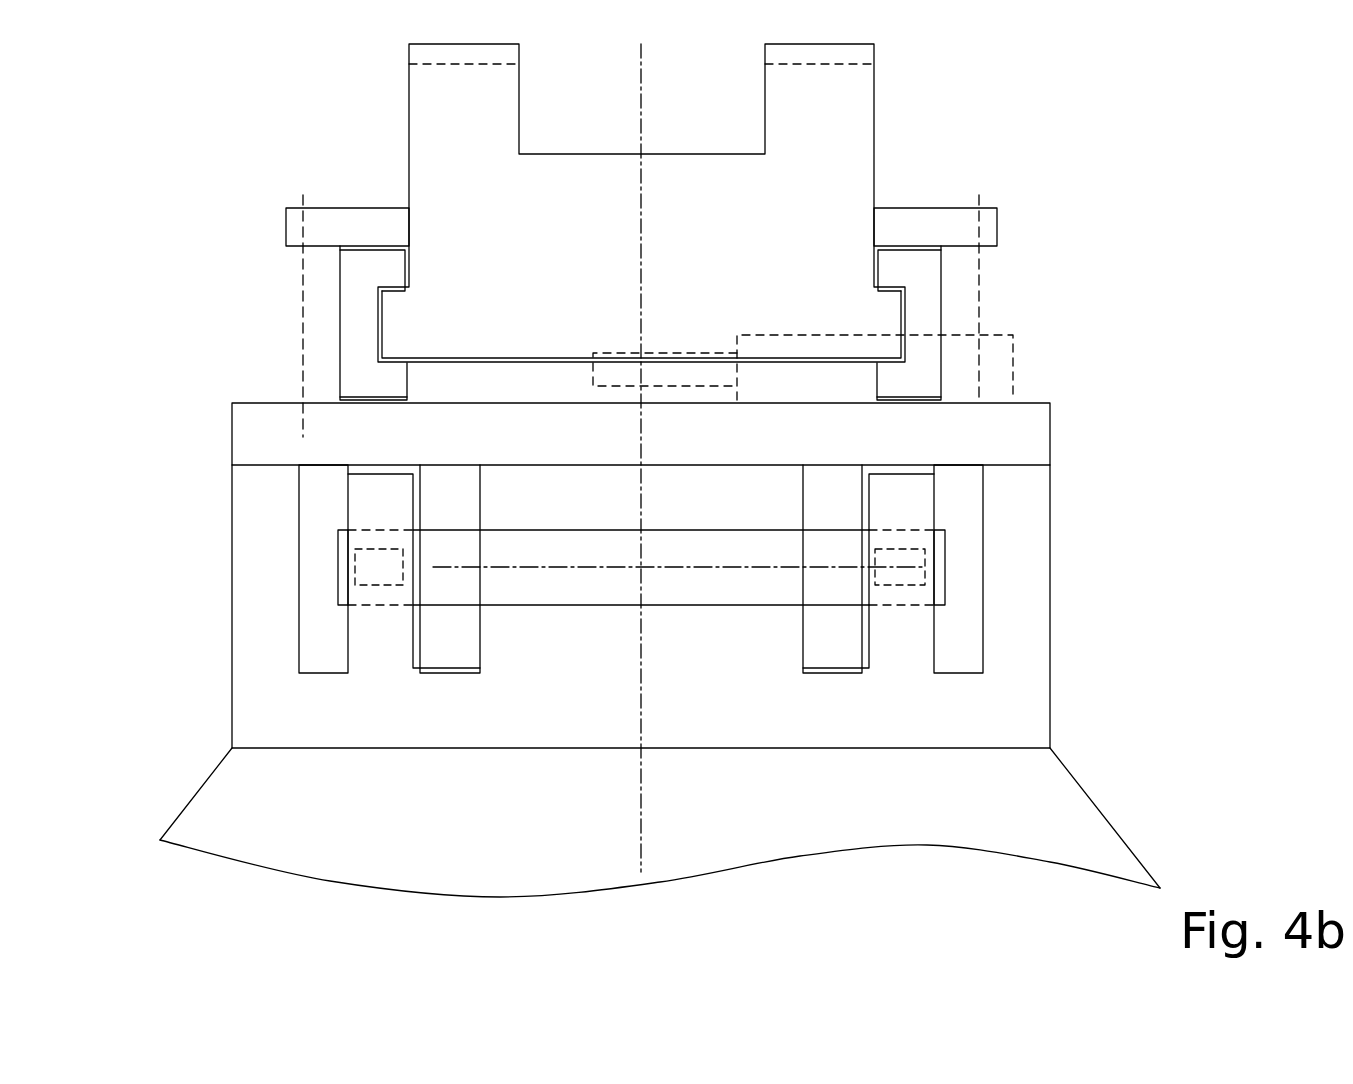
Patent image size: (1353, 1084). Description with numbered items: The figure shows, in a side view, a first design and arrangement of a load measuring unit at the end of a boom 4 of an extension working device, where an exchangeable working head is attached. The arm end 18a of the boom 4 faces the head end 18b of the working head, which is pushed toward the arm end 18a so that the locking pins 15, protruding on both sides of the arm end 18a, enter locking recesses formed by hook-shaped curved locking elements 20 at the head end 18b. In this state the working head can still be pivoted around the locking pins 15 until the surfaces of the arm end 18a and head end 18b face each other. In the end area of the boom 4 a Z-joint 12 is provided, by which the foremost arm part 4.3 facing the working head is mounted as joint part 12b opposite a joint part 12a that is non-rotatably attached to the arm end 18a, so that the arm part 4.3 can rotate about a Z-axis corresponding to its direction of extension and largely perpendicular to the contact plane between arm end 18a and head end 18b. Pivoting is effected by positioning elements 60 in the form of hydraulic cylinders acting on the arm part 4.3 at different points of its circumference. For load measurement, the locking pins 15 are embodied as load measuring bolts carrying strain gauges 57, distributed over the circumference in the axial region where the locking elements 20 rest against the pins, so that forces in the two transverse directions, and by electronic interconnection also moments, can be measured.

The boom 4 is at (967, 78).
The foremost arm part 4.3 is at (478, 185).
The Z-joint 12 is at (1005, 272).
The joint part 12a is at (362, 332).
The joint part 12b is at (360, 226).
The positioning element 60 is at (1002, 364).
The arm end 18a is at (418, 435).
The head end 18b is at (325, 720).
The locking element 20 is at (1117, 465).
The locking pin 15 is at (338, 600).
The strain gauge 57 is at (400, 532).